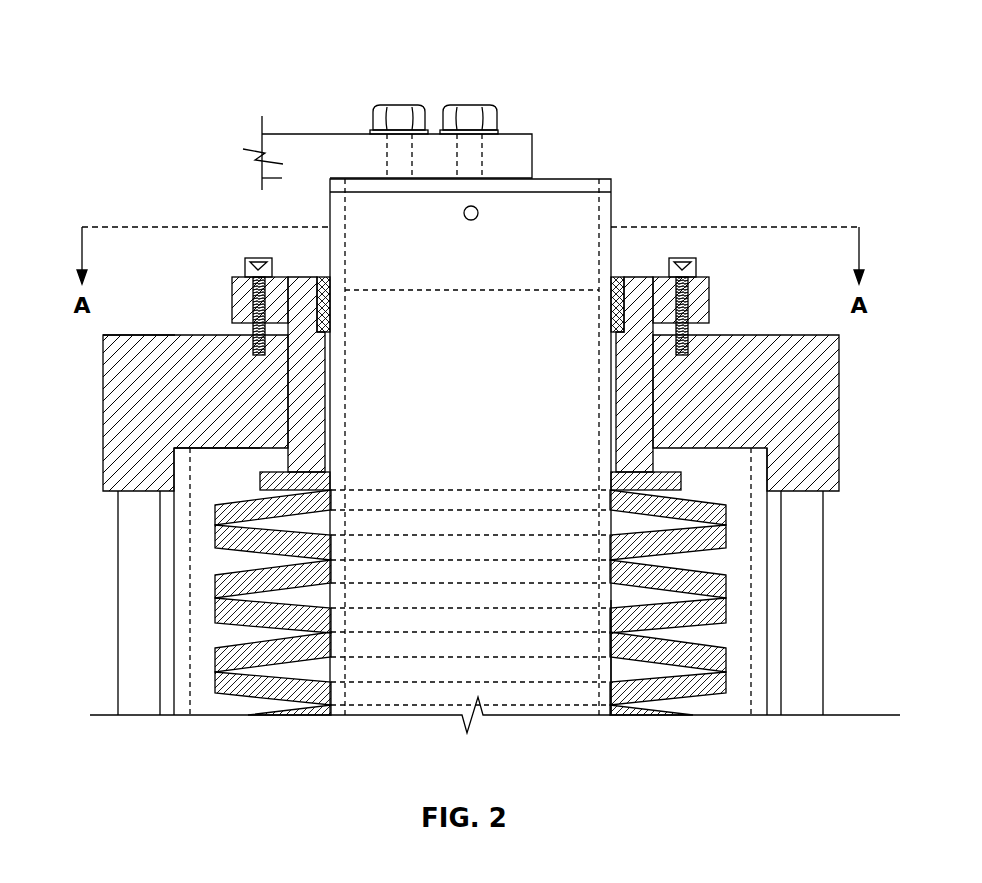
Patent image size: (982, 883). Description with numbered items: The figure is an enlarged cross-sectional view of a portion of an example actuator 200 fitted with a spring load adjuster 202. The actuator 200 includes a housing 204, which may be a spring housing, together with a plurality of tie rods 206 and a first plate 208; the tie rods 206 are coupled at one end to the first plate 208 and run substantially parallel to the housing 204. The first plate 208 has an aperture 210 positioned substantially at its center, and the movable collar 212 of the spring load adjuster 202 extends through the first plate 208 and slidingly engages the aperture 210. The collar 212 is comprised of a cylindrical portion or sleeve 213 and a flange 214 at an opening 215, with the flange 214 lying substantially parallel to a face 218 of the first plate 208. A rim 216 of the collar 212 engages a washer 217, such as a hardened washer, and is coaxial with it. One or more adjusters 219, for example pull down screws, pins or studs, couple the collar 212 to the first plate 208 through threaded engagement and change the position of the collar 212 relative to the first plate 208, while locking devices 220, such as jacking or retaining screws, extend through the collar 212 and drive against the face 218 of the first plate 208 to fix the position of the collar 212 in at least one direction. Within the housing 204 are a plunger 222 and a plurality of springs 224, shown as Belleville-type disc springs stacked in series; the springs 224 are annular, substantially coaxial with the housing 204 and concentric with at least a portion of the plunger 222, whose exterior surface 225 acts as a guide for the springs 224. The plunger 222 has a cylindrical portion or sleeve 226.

The actuator 200 is at (125, 52).
The spring load adjuster 202 is at (716, 280).
The housing 204 is at (770, 598).
The tie rods 206 is at (127, 690).
The first plate 208 is at (104, 350).
The aperture 210 is at (650, 417).
The collar 212 is at (307, 298).
The sleeve 213 is at (650, 360).
The flange 214 is at (235, 306).
The opening 215 is at (612, 283).
The rim 216 is at (316, 478).
The washer 217 is at (262, 483).
The face 218 is at (106, 335).
The adjusters 219 is at (244, 266).
The locking devices 220 is at (696, 266).
The plunger 222 is at (616, 463).
The springs 224 is at (217, 517).
The exterior surface 225 is at (320, 705).
The sleeve 226 is at (610, 640).